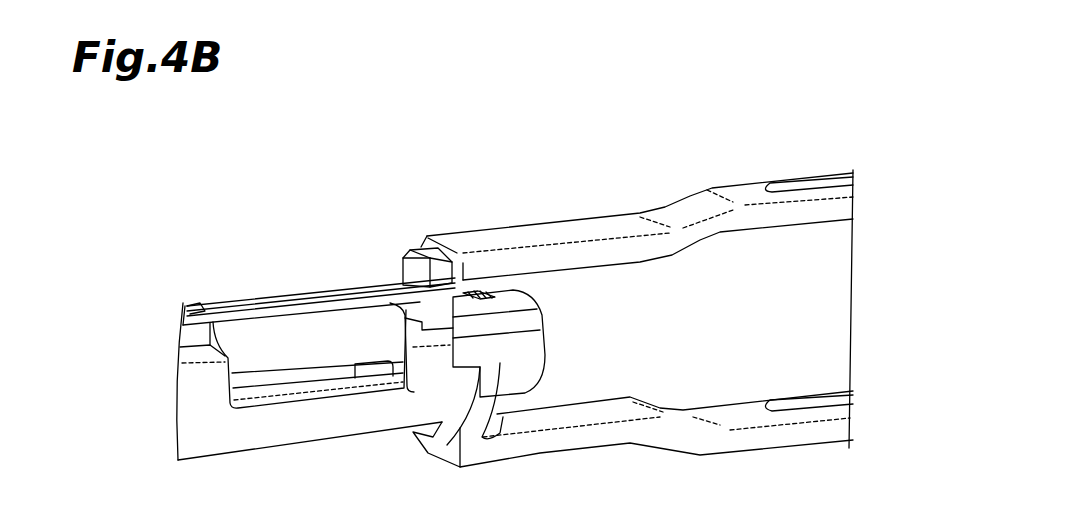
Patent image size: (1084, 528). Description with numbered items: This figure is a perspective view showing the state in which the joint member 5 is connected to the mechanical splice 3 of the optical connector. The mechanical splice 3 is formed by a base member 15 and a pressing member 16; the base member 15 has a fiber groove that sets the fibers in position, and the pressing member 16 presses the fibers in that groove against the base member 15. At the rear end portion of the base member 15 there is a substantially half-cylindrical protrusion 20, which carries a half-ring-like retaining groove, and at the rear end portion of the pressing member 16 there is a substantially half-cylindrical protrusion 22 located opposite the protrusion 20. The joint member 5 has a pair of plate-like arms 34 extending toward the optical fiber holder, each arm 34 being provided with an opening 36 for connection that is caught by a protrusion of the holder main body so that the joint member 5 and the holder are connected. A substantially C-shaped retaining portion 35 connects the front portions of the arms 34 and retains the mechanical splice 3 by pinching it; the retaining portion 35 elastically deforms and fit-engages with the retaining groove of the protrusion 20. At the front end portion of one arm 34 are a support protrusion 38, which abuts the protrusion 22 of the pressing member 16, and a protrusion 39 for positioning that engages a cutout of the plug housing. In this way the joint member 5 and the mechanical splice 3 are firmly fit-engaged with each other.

The mechanical splice 3 is at (245, 263).
The joint member 5 is at (640, 163).
The base member 15 is at (343, 426).
The pressing member 16 is at (310, 330).
The protrusion 20 is at (527, 353).
The protrusion 22 is at (517, 299).
The arms 34 is at (563, 233).
The retaining portion 35 is at (503, 415).
The opening for connection 36 is at (808, 182).
The support protrusion 38 is at (393, 262).
The protrusion for positioning 39 is at (411, 256).